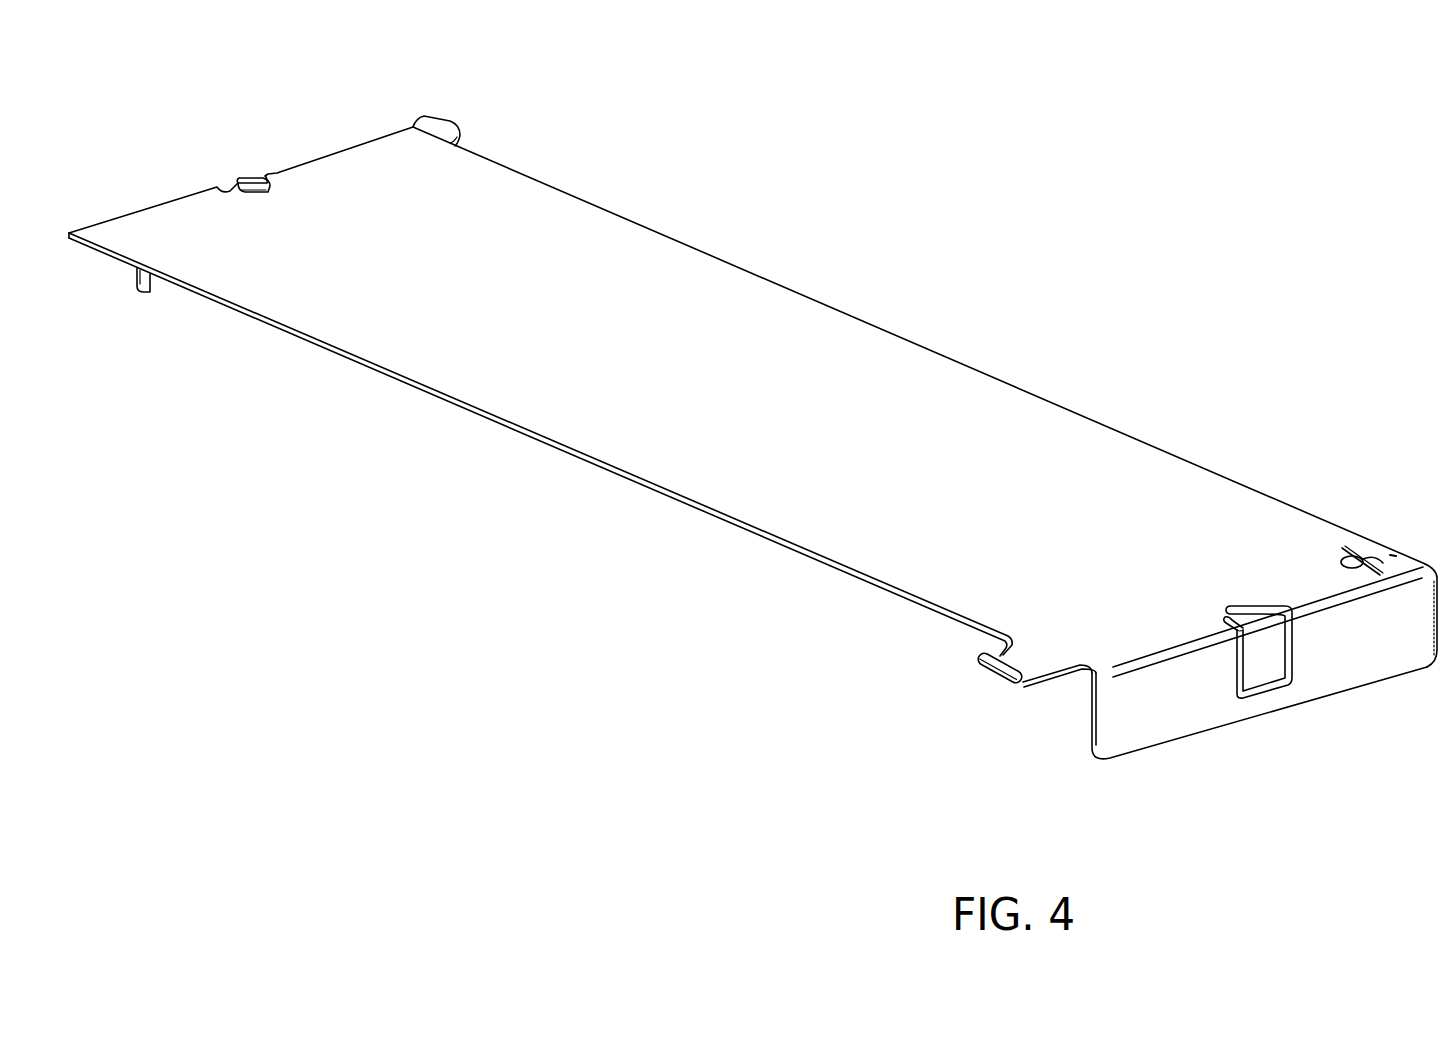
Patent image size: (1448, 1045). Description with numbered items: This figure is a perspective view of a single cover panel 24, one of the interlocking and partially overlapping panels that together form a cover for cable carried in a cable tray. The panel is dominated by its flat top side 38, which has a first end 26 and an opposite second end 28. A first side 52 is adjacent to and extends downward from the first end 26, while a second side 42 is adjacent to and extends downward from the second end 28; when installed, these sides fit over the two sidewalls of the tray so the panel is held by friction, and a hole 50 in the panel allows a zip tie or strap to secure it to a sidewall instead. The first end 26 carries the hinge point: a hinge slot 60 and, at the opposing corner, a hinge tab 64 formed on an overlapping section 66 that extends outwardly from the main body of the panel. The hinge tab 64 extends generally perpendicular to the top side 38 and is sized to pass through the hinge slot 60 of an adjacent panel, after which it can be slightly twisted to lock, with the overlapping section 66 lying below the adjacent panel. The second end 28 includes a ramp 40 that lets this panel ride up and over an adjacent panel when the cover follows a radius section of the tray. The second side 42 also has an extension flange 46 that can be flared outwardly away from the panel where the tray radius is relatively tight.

The cover panel 24 is at (1038, 233).
The first end 26 is at (1282, 562).
The second end 28 is at (347, 165).
The top side 38 is at (817, 417).
The ramp 40 is at (424, 115).
The second side 42 is at (150, 283).
The extension flange 46 is at (135, 273).
The hole 50 is at (258, 181).
The first side 52 is at (1170, 647).
The hinge slot 60 is at (1352, 550).
The hinge tab 64 is at (980, 655).
The overlapping section 66 is at (1033, 653).